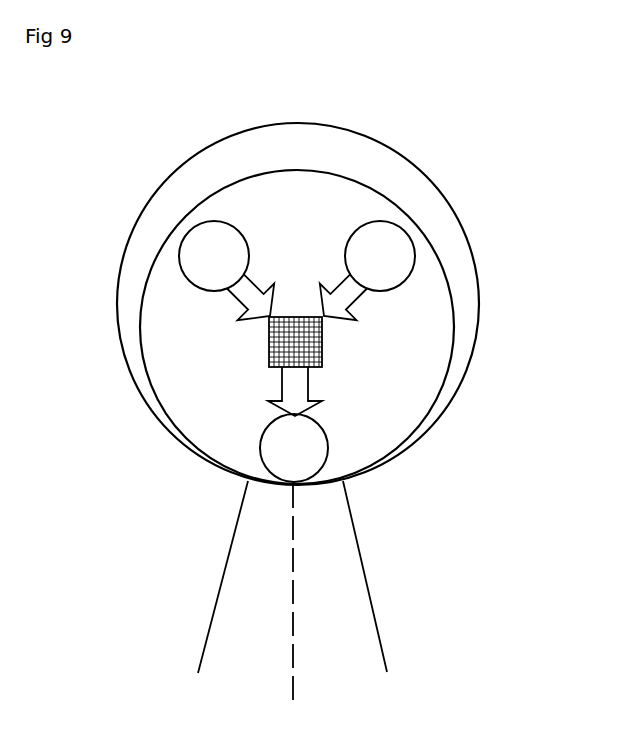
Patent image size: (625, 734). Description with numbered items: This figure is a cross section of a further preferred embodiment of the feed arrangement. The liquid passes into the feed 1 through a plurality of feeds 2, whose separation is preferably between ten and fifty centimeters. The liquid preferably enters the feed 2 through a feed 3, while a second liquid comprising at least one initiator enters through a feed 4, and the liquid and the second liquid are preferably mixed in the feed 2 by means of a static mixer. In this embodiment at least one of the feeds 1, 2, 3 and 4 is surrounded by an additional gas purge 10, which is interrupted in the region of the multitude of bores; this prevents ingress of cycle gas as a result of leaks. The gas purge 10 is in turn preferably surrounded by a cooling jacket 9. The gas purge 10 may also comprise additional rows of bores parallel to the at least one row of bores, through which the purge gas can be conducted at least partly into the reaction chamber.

The feed 1 is at (329, 448).
The feed 2 is at (322, 350).
The feed 3 is at (415, 245).
The feed 4 is at (183, 241).
The cooling jacket 9 is at (398, 150).
The gas purge 10 is at (398, 200).